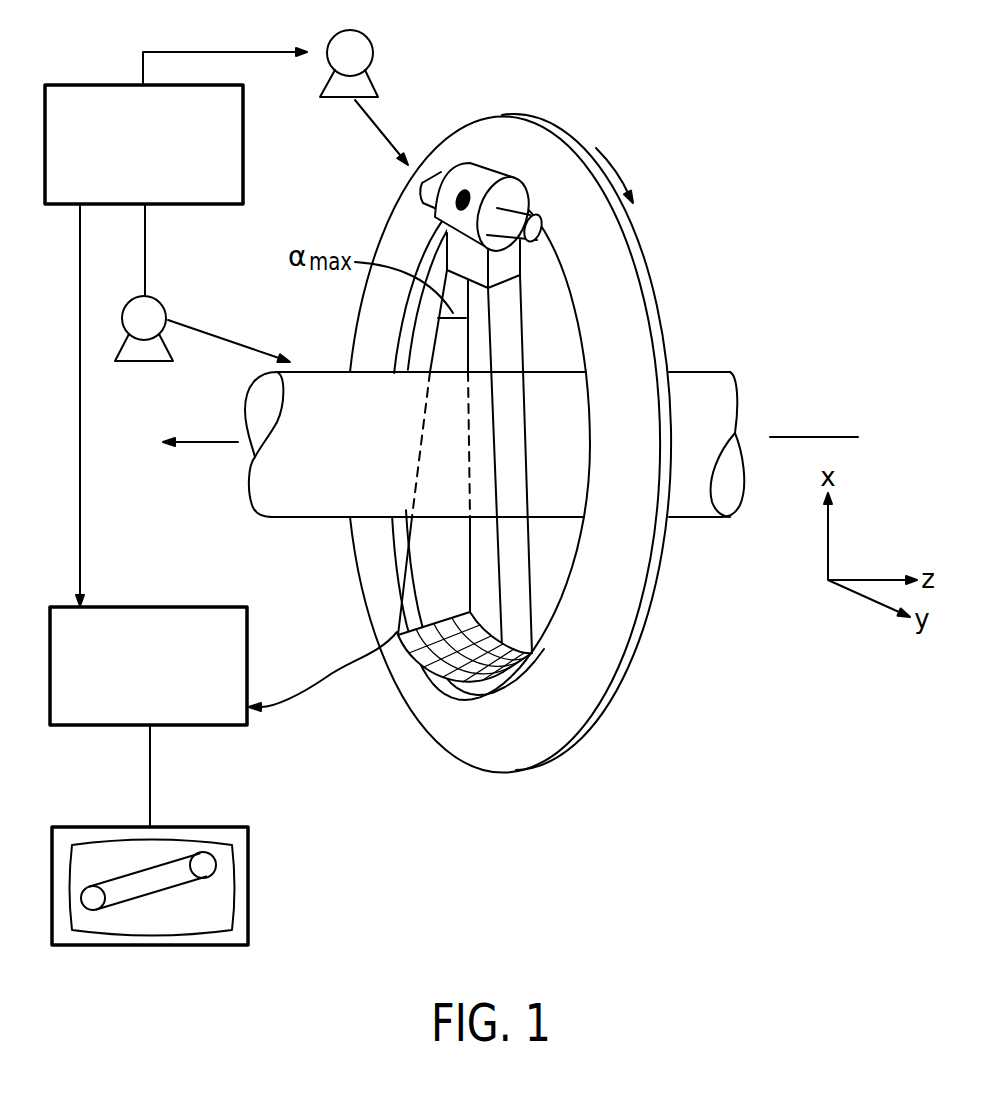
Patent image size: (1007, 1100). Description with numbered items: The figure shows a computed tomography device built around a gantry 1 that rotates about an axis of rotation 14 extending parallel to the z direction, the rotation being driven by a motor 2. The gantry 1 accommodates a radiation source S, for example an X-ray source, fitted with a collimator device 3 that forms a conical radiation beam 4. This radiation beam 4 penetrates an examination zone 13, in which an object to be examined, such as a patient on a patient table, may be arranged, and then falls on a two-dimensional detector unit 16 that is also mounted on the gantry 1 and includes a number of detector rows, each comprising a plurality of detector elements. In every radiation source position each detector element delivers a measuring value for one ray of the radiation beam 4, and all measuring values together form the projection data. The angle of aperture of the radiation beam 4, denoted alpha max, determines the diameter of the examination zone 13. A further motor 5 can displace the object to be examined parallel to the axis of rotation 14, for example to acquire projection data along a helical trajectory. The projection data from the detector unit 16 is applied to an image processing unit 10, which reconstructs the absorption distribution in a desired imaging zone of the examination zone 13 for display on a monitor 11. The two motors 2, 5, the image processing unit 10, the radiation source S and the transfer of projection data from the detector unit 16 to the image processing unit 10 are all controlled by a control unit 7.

The gantry 1 is at (621, 606).
The motor 2 is at (374, 47).
The collimator device 3 is at (521, 267).
The conical radiation beam 4 is at (499, 556).
The motor 5 is at (165, 300).
The control unit 7 is at (87, 85).
The image processing unit 10 is at (93, 710).
The monitor 11 is at (250, 920).
The examination zone 13 is at (313, 388).
The axis of rotation 14 is at (200, 442).
The two-dimensional detector unit 16 is at (428, 688).
The radiation source S is at (488, 176).